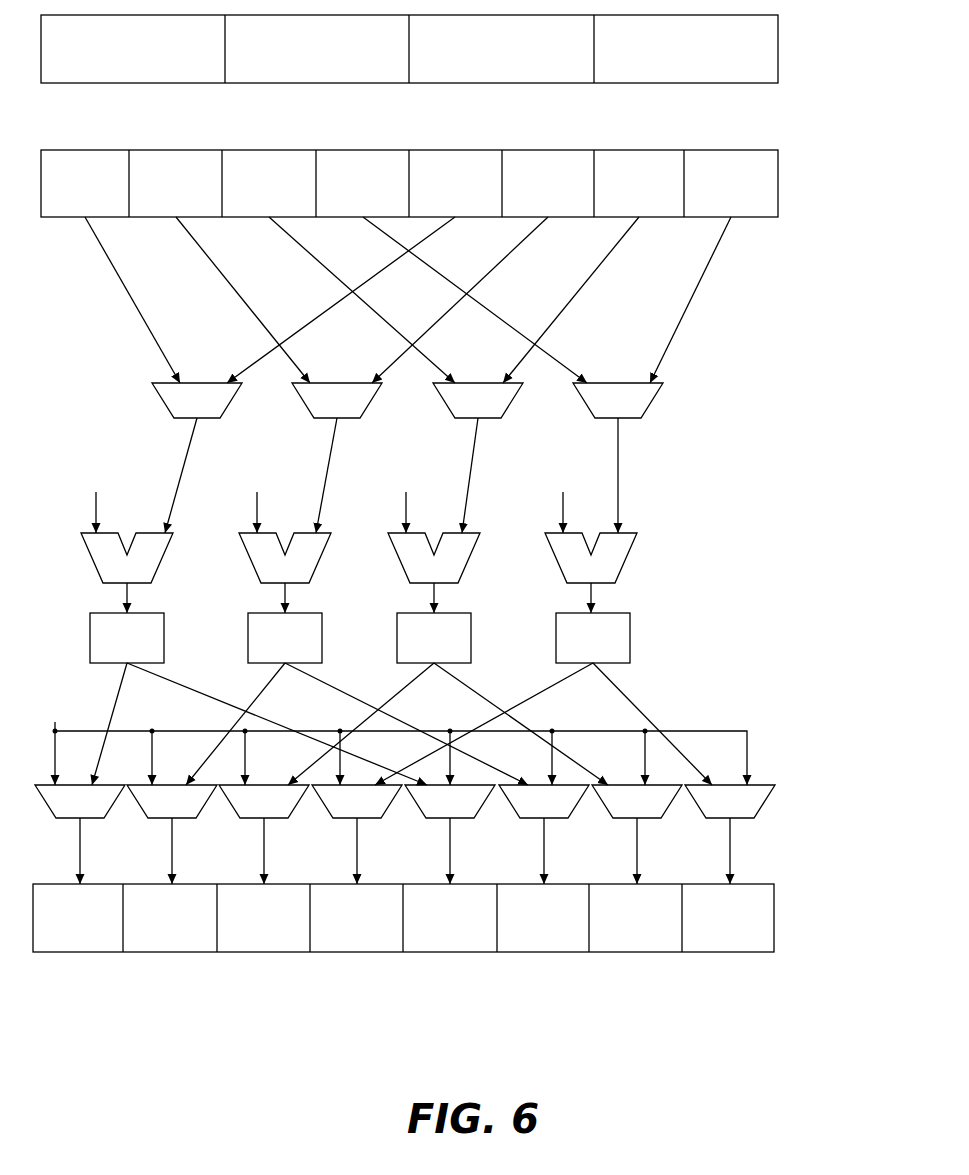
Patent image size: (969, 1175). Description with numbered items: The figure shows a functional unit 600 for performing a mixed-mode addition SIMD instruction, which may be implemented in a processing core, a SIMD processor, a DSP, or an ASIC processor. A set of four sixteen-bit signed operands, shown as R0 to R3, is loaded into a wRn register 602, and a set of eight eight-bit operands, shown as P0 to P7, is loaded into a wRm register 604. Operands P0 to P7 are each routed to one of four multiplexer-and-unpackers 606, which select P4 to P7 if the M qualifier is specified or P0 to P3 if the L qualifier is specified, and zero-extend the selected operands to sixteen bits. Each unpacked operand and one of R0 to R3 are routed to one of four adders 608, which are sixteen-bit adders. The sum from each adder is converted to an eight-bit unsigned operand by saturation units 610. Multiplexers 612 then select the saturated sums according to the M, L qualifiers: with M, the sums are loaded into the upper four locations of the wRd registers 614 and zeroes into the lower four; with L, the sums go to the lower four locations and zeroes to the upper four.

The functional unit 600 is at (454, 537).
The wRn register 602 is at (458, 49).
The wRm register 604 is at (456, 183).
The multiplexer-and-unpackers 606 is at (407, 400).
The adders 608 is at (359, 573).
The saturation units 610 is at (360, 638).
The multiplexers 612 is at (405, 834).
The wRd registers 614 is at (450, 918).